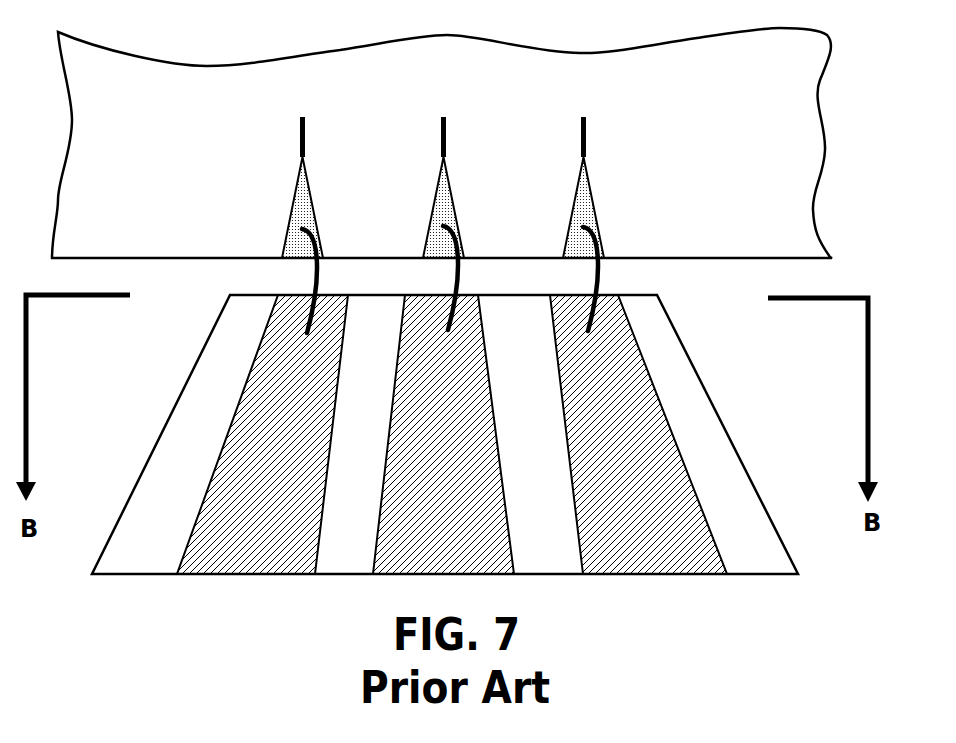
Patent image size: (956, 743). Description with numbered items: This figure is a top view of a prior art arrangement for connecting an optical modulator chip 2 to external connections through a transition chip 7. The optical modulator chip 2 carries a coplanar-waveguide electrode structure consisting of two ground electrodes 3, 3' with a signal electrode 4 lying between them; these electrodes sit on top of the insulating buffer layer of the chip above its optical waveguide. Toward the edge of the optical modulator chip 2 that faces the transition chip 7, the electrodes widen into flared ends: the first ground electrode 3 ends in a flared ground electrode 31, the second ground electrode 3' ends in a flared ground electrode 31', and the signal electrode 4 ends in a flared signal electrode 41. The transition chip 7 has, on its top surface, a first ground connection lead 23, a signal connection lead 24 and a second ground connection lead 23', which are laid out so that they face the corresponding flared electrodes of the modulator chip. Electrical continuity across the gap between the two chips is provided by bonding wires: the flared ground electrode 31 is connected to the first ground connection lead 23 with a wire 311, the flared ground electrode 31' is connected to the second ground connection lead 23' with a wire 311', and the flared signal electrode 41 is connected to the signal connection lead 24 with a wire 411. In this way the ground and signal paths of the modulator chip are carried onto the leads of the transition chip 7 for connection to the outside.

The optical modulator chip 2 is at (778, 110).
The ground electrode 3' is at (346, 200).
The signal electrode 4 is at (485, 198).
The ground electrode 3 is at (626, 199).
The flared ground electrode 31' is at (340, 185).
The flared signal electrode 41 is at (445, 192).
The flared ground electrode 31 is at (619, 185).
The wire 311' is at (356, 273).
The wire 411 is at (465, 260).
The wire 311 is at (636, 272).
The transition chip 7 is at (449, 434).
The second ground connection lead 23' is at (215, 434).
The signal connection lead 24 is at (460, 434).
The first ground connection lead 23 is at (683, 434).